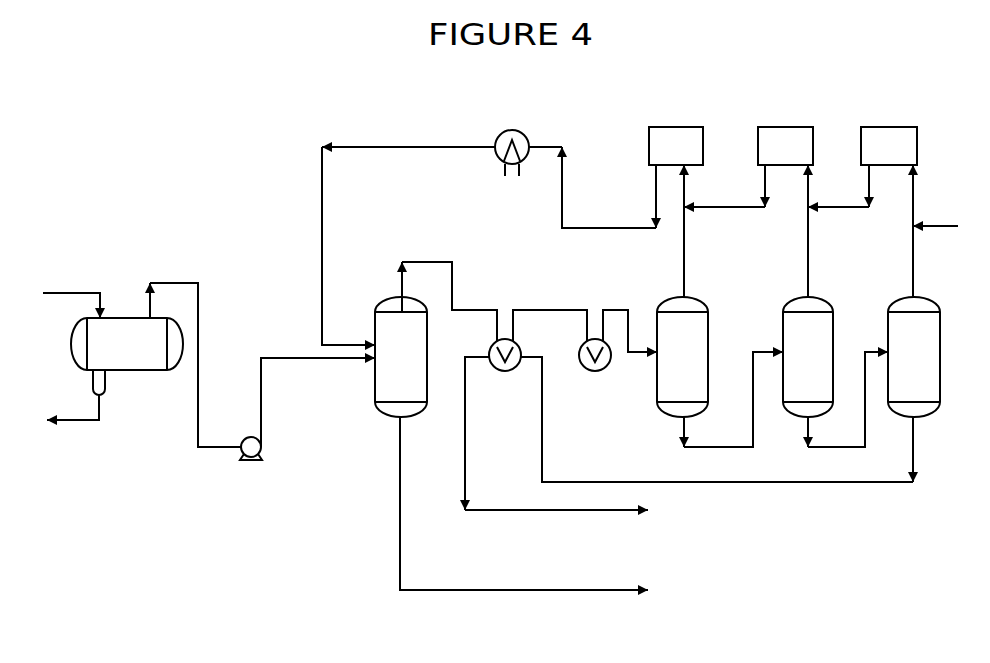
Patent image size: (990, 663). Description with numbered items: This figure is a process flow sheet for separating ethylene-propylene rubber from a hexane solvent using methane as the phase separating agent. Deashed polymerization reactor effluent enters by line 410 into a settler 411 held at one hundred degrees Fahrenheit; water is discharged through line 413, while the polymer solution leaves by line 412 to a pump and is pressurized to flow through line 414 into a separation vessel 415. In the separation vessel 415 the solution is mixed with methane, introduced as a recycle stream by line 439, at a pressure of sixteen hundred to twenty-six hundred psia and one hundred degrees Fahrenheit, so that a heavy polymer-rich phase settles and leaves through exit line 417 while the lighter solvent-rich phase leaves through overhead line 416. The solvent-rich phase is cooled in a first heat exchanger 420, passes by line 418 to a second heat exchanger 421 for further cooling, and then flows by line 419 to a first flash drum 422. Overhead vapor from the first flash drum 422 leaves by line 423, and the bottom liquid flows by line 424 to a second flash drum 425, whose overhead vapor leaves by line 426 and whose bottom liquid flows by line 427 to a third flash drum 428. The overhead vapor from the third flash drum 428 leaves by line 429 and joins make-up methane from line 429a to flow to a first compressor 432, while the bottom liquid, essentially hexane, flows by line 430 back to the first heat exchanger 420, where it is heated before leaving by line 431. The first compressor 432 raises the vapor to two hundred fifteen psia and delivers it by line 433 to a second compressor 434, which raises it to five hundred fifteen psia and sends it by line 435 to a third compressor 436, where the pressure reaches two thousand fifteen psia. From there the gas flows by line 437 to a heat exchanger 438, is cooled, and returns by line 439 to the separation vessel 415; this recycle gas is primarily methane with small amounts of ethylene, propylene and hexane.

The line 410 is at (98, 290).
The settler 411 is at (127, 356).
The line 412 is at (160, 268).
The line 413 is at (62, 424).
The line 414 is at (262, 381).
The separation vessel 415 is at (401, 357).
The overhead line 416 is at (450, 259).
The exit line 417 is at (400, 465).
The line 418 is at (563, 307).
The line 419 is at (644, 307).
The first heat exchanger 420 is at (492, 372).
The second heat exchanger 421 is at (581, 365).
The first flash drum 422 is at (682, 357).
The line 423 is at (685, 265).
The line 424 is at (702, 432).
The second flash drum 425 is at (808, 357).
The line 426 is at (809, 265).
The line 427 is at (854, 451).
The third flash drum 428 is at (914, 357).
The line 429 is at (914, 265).
The line 429a is at (934, 229).
The line 430 is at (783, 485).
The line 431 is at (562, 513).
The first compressor 432 is at (889, 146).
The line 433 is at (868, 174).
The second compressor 434 is at (785, 146).
The line 435 is at (746, 202).
The third compressor 436 is at (676, 146).
The line 437 is at (574, 233).
The heat exchanger 438 is at (515, 130).
The line 439 is at (352, 147).